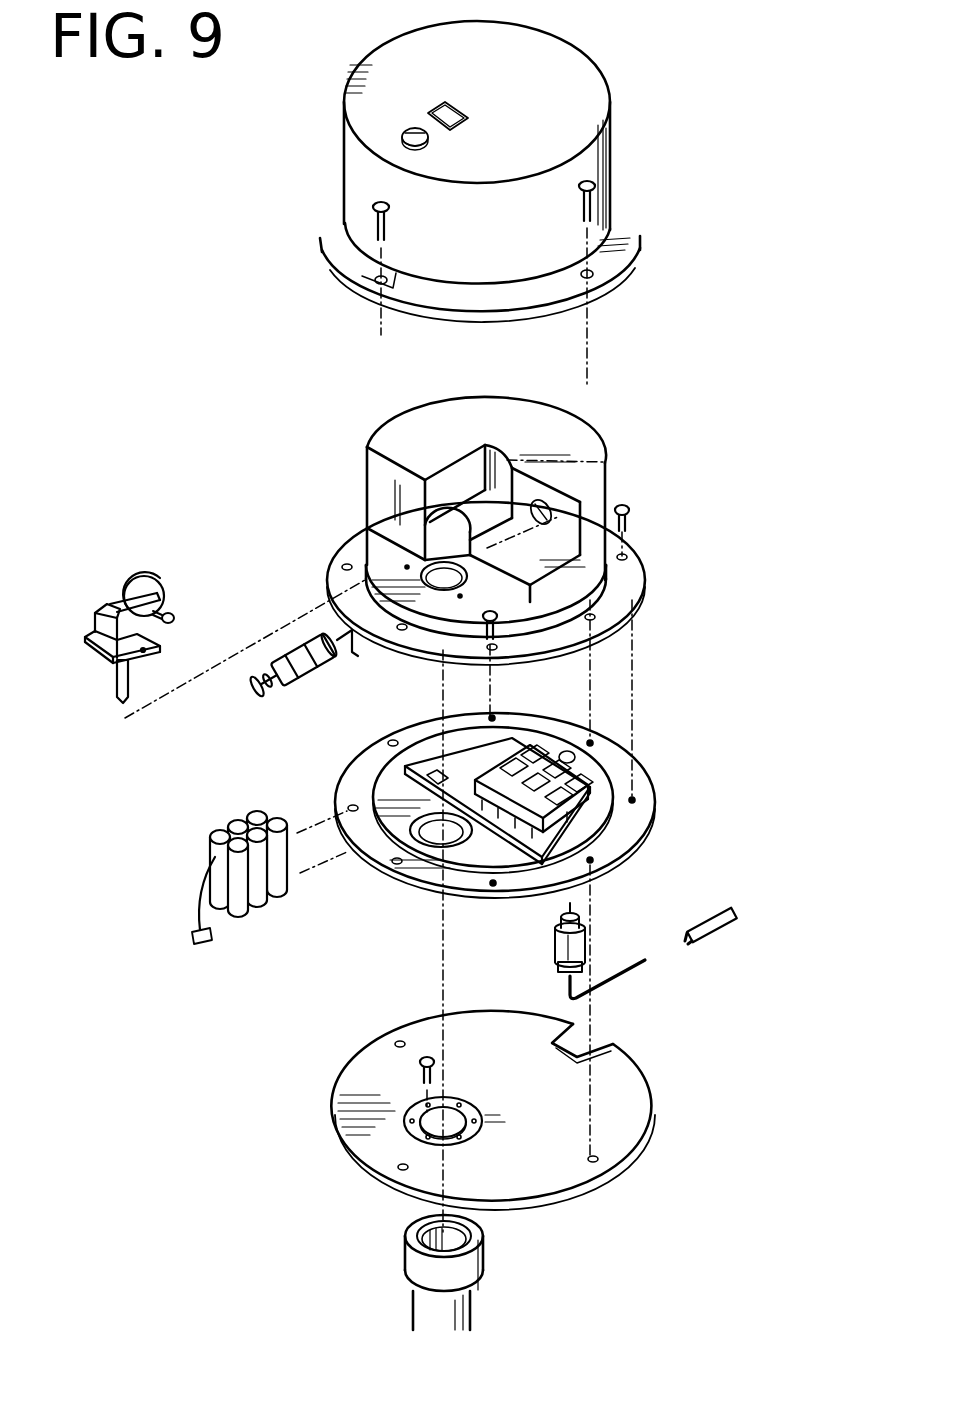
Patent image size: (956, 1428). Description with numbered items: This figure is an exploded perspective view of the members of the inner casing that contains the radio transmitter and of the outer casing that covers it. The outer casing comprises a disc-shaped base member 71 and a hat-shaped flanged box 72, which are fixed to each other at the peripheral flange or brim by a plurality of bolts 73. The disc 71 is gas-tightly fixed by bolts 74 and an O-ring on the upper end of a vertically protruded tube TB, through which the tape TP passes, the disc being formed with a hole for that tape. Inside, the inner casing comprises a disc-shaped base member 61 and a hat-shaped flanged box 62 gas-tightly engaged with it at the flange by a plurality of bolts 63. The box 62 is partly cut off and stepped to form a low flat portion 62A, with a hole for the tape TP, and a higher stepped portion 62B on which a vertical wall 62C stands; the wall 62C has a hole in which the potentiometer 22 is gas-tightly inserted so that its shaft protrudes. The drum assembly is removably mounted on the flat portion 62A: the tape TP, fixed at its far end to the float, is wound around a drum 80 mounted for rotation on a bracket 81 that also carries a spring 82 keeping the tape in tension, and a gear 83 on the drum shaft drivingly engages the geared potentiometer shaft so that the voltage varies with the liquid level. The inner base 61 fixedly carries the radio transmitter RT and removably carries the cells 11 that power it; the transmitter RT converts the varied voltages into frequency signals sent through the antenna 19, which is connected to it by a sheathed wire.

The flanged box 72 is at (594, 90).
The bolts 73 is at (367, 223).
The flanged box 62 is at (553, 463).
The low flat portion 62A is at (443, 603).
The higher stepped portion 62B is at (558, 563).
The vertical wall 62C is at (583, 535).
The bolts 63 is at (630, 506).
The drum 80 is at (157, 587).
The bracket 81 is at (105, 645).
The spring 82 is at (117, 595).
The gear 83 is at (173, 622).
The tape TP is at (117, 687).
The potentiometer 22 is at (333, 668).
The base member 61 is at (612, 755).
The radio transmitter RT is at (580, 827).
The cell 11 is at (247, 912).
The antenna 19 is at (722, 928).
The bolts 74 is at (423, 1076).
The base member 71 is at (633, 1108).
The tube TB is at (427, 1310).